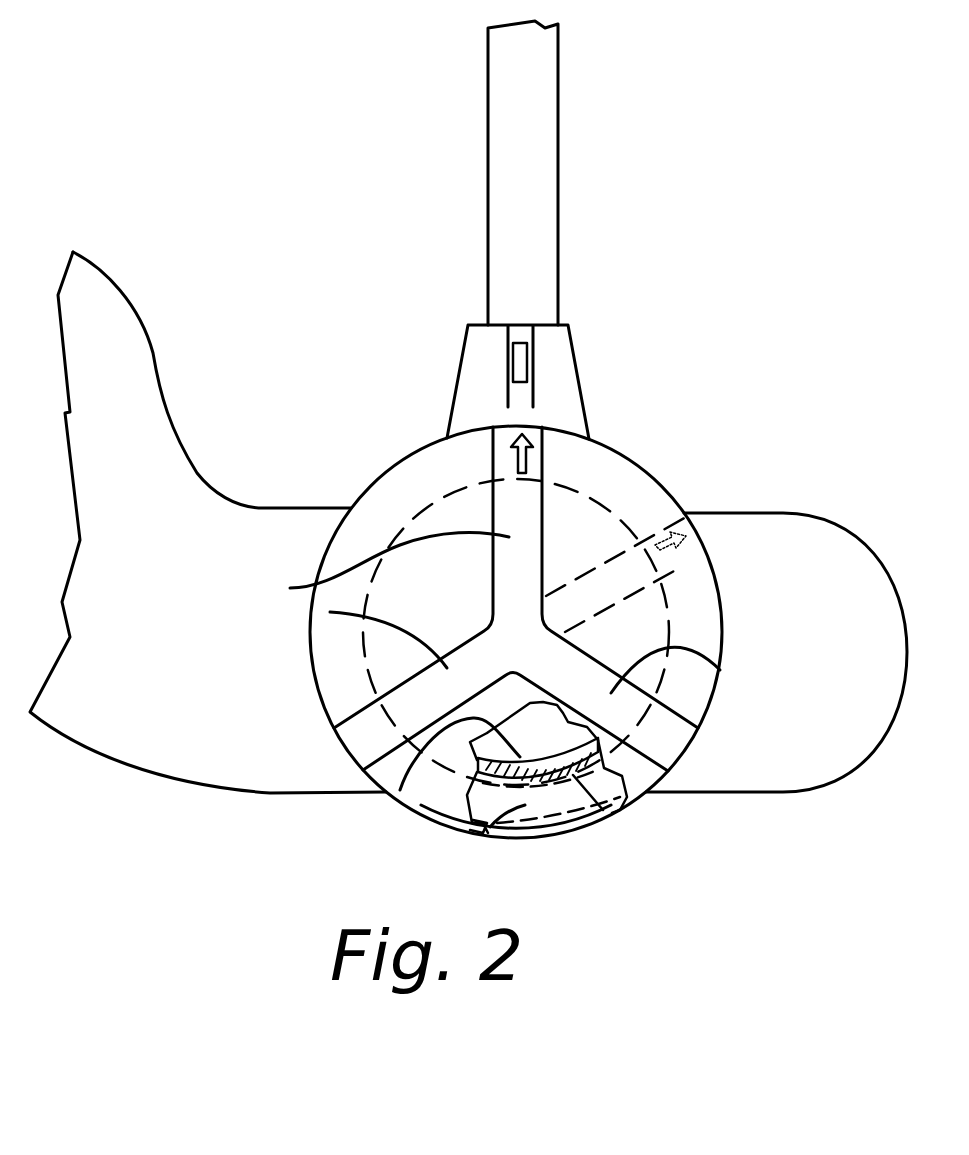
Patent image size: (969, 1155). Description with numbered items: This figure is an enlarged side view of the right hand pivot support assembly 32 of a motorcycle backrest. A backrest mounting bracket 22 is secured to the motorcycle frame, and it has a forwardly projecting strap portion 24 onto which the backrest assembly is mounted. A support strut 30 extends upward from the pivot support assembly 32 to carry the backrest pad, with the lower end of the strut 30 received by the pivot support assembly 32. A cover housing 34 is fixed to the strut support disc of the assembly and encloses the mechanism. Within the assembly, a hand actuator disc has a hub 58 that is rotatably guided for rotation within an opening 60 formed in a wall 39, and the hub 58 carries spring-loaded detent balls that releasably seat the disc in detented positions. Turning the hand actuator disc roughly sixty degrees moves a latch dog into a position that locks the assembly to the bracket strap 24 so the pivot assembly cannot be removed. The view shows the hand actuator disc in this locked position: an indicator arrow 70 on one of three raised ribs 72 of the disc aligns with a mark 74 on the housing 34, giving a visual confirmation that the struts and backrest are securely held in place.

The backrest mounting bracket 22 is at (160, 468).
The strap portion 24 is at (740, 553).
The support strut 30 is at (533, 190).
The pivot support assembly 32 is at (692, 478).
The cover housing 34 is at (580, 832).
The wall 39 is at (480, 827).
The hub 58 is at (427, 745).
The opening 60 is at (600, 822).
The indicator arrow 70 is at (510, 457).
The raised rib 72 is at (720, 670).
The mark 74 is at (518, 372).